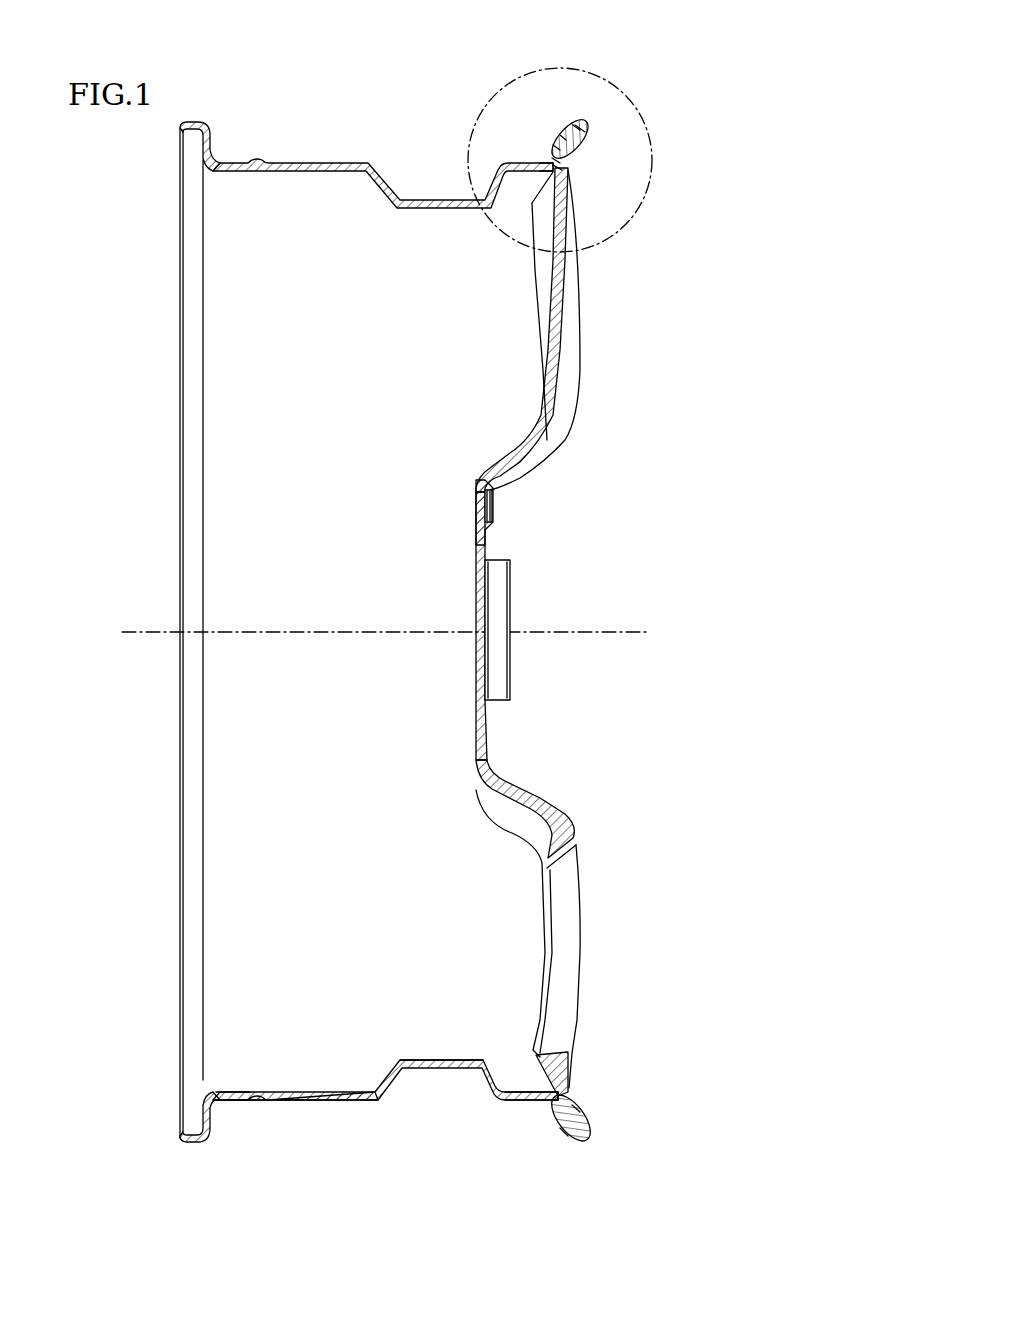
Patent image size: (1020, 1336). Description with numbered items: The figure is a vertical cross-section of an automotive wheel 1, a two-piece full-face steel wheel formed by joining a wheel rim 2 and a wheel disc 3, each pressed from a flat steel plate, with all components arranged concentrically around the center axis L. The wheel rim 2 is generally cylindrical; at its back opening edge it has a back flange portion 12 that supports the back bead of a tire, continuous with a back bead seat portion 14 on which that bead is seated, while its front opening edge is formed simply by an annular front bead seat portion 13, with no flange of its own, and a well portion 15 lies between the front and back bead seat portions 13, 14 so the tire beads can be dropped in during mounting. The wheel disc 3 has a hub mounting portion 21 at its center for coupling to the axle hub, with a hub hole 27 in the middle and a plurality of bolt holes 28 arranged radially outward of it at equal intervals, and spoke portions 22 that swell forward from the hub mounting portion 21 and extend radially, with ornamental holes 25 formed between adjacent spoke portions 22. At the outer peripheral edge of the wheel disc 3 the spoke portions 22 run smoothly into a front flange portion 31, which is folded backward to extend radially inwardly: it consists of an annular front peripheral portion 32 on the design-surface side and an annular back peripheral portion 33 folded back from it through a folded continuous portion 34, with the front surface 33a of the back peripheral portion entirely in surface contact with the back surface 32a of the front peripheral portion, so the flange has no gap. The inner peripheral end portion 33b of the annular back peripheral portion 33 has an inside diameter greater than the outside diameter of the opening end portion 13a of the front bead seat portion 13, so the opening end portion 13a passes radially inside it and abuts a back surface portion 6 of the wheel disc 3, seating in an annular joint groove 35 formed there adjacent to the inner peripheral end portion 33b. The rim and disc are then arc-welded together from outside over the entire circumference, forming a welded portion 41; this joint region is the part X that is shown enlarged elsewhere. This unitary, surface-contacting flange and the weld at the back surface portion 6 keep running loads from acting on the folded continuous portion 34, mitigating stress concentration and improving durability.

The automotive wheel 1 is at (731, 405).
The wheel rim 2 is at (361, 630).
The wheel disc 3 is at (543, 615).
The back surface portion 6 is at (556, 163).
The back flange portion 12 is at (188, 1144).
The front bead seat portion 13 is at (523, 1102).
The opening end portion 13a is at (552, 161).
The back bead seat portion 14 is at (232, 1100).
The well portion 15 is at (405, 1064).
The hub mounting portion 21 is at (477, 737).
The spoke portions 22 is at (570, 360).
The ornamental holes 25 is at (560, 945).
The hub hole 27 is at (500, 665).
The bolt holes 28 is at (500, 515).
The front flange portion 31 is at (590, 1131).
The annular front peripheral portion 32 is at (585, 136).
The back surface 32a is at (565, 1133).
The annular back peripheral portion 33 is at (564, 135).
The front surface 33a is at (575, 1110).
The inner peripheral end portion 33b is at (557, 146).
The folded continuous portion 34 is at (576, 127).
The annular joint groove 35 is at (558, 1096).
The welded portion 41 is at (555, 156).
The center axis L is at (150, 631).
The part X is at (655, 185).